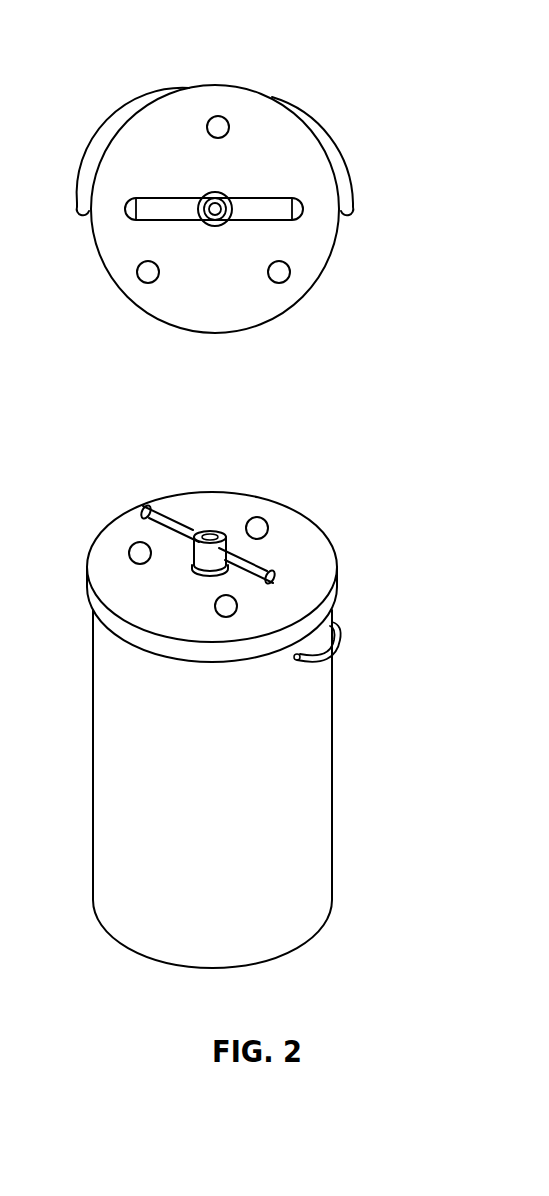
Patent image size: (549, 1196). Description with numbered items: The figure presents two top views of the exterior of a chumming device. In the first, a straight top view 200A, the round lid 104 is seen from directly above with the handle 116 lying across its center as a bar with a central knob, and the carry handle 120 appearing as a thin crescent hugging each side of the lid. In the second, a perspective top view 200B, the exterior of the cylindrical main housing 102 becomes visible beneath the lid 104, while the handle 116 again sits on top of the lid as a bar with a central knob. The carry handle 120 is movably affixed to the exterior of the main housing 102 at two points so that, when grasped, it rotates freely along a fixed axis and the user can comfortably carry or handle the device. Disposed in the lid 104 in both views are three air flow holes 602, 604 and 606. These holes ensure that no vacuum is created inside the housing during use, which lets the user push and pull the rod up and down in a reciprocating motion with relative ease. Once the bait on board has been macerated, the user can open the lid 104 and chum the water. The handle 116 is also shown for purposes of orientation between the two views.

The main housing 102 is at (93, 756).
The lid 104 is at (234, 312).
The handle 116 is at (290, 212).
The carry handle 120 is at (343, 162).
The air flow hole 602 is at (219, 116).
The air flow hole 604 is at (136, 273).
The air flow hole 606 is at (291, 273).
The top view 200A is at (406, 85).
The perspective top view 200B is at (422, 497).